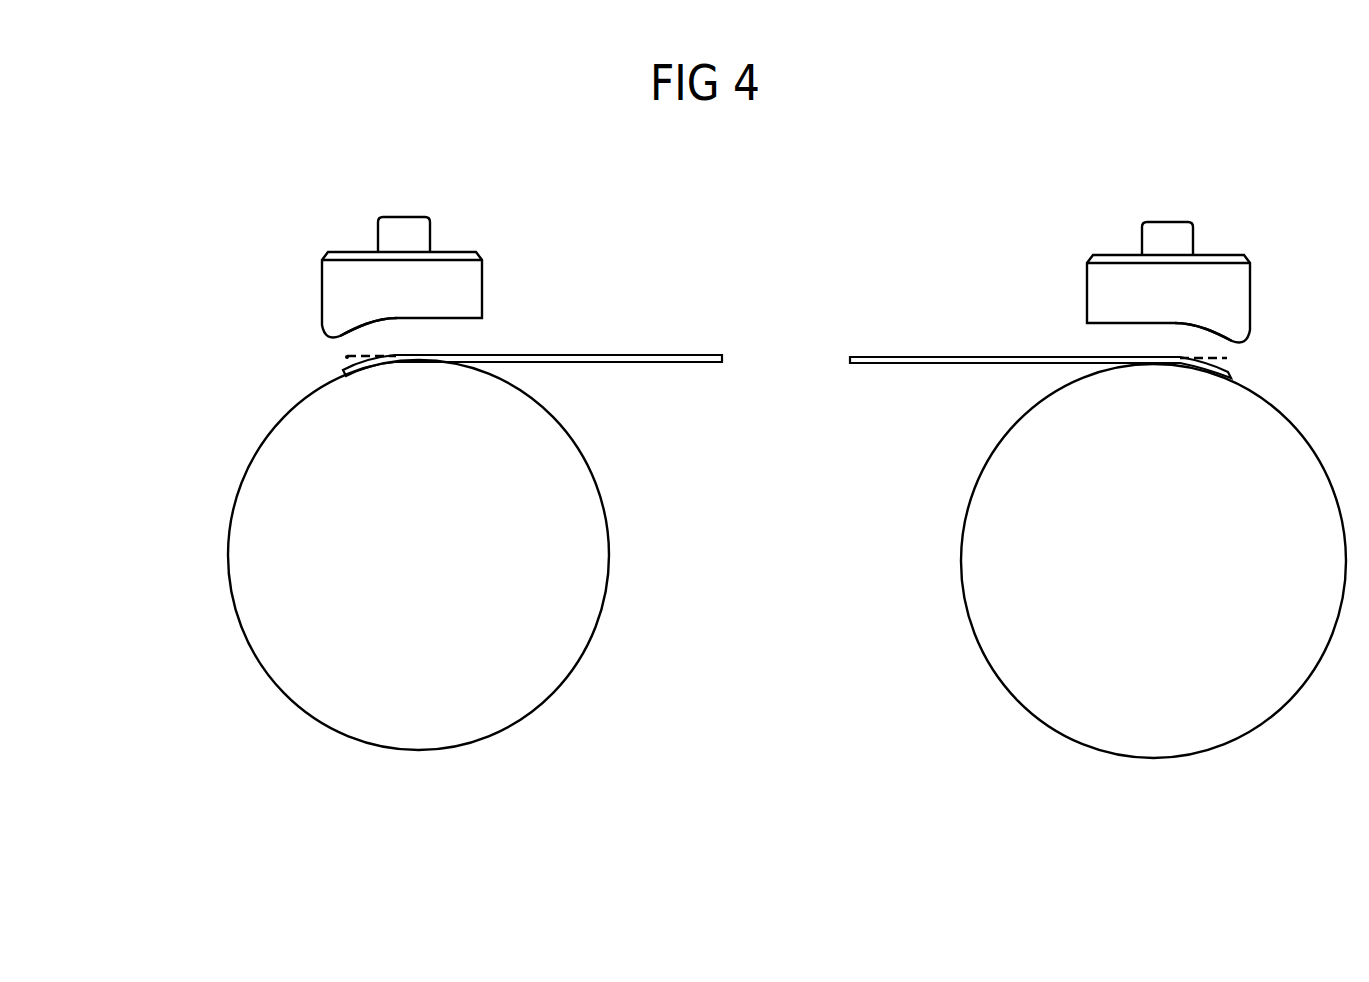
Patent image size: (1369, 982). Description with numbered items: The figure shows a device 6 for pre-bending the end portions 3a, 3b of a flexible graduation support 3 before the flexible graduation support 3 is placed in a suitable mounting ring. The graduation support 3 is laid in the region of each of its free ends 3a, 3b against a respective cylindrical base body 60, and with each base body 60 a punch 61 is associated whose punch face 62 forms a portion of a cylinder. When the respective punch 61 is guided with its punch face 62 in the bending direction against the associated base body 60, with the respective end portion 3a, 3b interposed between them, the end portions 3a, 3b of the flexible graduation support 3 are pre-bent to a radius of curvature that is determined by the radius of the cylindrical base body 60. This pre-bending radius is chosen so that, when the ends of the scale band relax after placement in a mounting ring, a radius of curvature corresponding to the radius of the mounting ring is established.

The flexible graduation support 3 is at (633, 357).
The end portion 3a is at (347, 357).
The end portion 3b is at (1227, 360).
The device 6 is at (777, 637).
The cylindrical base body 60 is at (543, 703).
The punch 61 is at (357, 250).
The punch face 62 is at (357, 327).